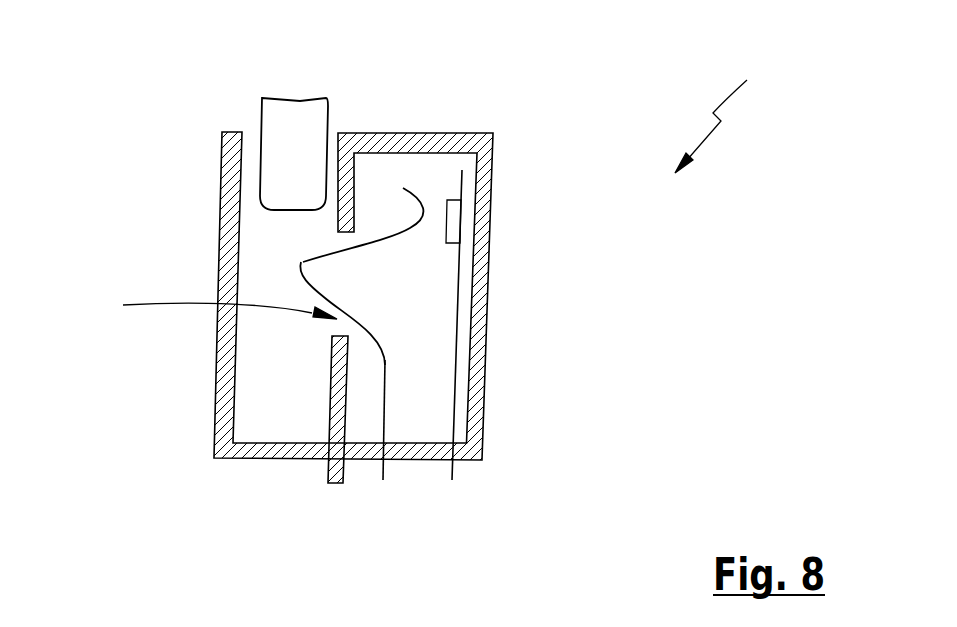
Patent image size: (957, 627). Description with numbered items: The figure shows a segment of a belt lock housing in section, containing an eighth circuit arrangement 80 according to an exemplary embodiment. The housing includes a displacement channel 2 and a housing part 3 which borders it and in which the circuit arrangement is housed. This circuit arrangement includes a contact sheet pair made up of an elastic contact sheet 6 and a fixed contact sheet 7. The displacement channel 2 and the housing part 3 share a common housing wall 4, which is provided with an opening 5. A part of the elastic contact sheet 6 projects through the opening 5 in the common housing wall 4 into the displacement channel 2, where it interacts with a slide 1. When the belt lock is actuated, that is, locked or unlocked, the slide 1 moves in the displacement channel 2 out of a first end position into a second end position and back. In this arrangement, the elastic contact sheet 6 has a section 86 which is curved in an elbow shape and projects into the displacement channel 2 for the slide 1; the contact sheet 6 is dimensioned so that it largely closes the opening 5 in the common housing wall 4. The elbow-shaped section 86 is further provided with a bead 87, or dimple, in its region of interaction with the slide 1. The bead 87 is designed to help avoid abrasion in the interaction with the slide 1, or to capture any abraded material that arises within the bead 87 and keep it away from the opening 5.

The slide 1 is at (278, 122).
The displacement channel 2 is at (245, 407).
The housing part 3 is at (425, 168).
The common housing wall 4 is at (333, 393).
The opening 5 is at (192, 304).
The elastic contact sheet 6 is at (391, 413).
The fixed contact sheet 7 is at (457, 373).
The eighth circuit arrangement 80 is at (748, 98).
The section curved in an elbow shape 86 is at (301, 270).
The bead 87 is at (303, 275).